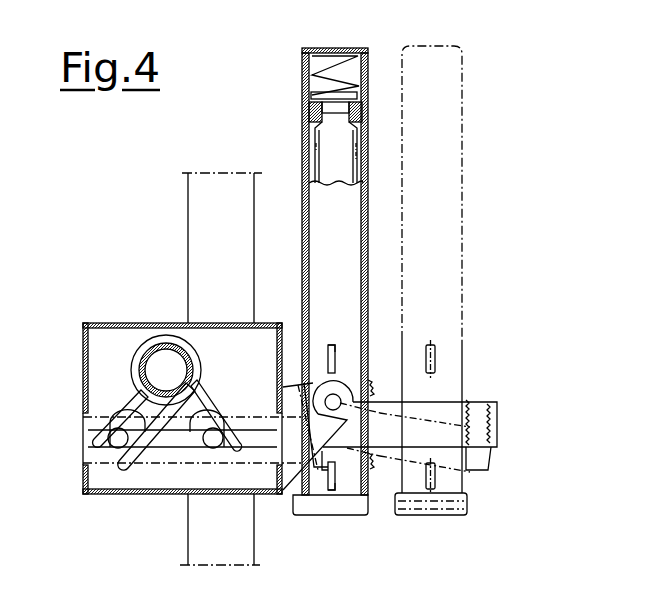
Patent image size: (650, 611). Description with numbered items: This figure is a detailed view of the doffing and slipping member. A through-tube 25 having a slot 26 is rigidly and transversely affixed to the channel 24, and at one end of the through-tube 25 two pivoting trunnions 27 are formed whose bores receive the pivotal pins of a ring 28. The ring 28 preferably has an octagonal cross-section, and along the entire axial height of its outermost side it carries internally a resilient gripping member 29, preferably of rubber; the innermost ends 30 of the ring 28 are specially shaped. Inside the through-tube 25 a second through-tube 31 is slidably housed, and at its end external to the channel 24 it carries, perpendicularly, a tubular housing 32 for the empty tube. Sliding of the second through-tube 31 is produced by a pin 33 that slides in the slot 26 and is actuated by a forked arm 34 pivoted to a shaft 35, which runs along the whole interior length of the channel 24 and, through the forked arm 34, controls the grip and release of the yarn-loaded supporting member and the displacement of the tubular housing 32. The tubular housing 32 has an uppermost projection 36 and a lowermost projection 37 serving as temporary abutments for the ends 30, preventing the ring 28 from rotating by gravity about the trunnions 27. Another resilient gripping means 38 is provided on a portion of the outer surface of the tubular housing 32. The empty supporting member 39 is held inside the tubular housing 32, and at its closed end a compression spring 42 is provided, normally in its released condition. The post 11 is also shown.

The post 11 is at (205, 230).
The channel 24 is at (112, 494).
The through-tube 25 is at (174, 452).
The slot 26 is at (152, 462).
The pivoting trunnions 27 is at (327, 418).
The ring 28 is at (477, 412).
The resilient gripping member 29 is at (442, 428).
The innermost ends 30 is at (313, 346).
The second through-tube 31 is at (251, 416).
The tubular housing 32 is at (368, 255).
The pin 33 is at (95, 437).
The forked arm 34 is at (115, 391).
The shaft 35 is at (160, 358).
The uppermost projection 36 is at (334, 347).
The lowermost projection 37 is at (337, 484).
The resilient gripping means 38 is at (370, 383).
The empty supporting member 39 is at (357, 157).
The compression spring 42 is at (301, 77).